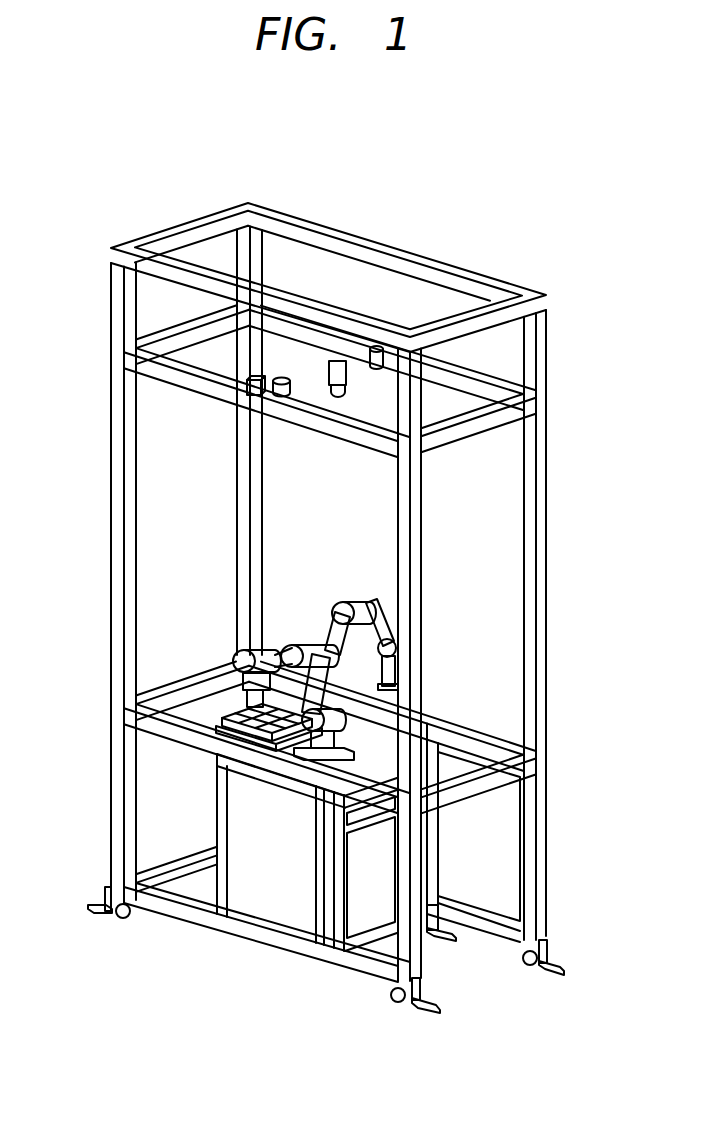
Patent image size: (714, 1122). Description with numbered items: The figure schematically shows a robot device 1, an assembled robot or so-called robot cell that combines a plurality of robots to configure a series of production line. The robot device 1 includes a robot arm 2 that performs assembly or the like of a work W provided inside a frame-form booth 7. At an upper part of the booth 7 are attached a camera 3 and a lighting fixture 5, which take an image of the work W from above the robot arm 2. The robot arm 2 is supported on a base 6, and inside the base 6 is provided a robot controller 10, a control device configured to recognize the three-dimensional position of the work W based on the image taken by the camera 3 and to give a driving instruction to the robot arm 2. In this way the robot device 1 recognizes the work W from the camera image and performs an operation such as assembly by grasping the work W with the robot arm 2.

The robot device 1 is at (451, 160).
The robot arm 2 is at (356, 603).
The camera 3 is at (345, 358).
The lighting fixture 5 is at (373, 366).
The base 6 is at (432, 818).
The frame-form booth 7 is at (118, 400).
The robot controller 10 is at (363, 890).
The work W is at (225, 712).